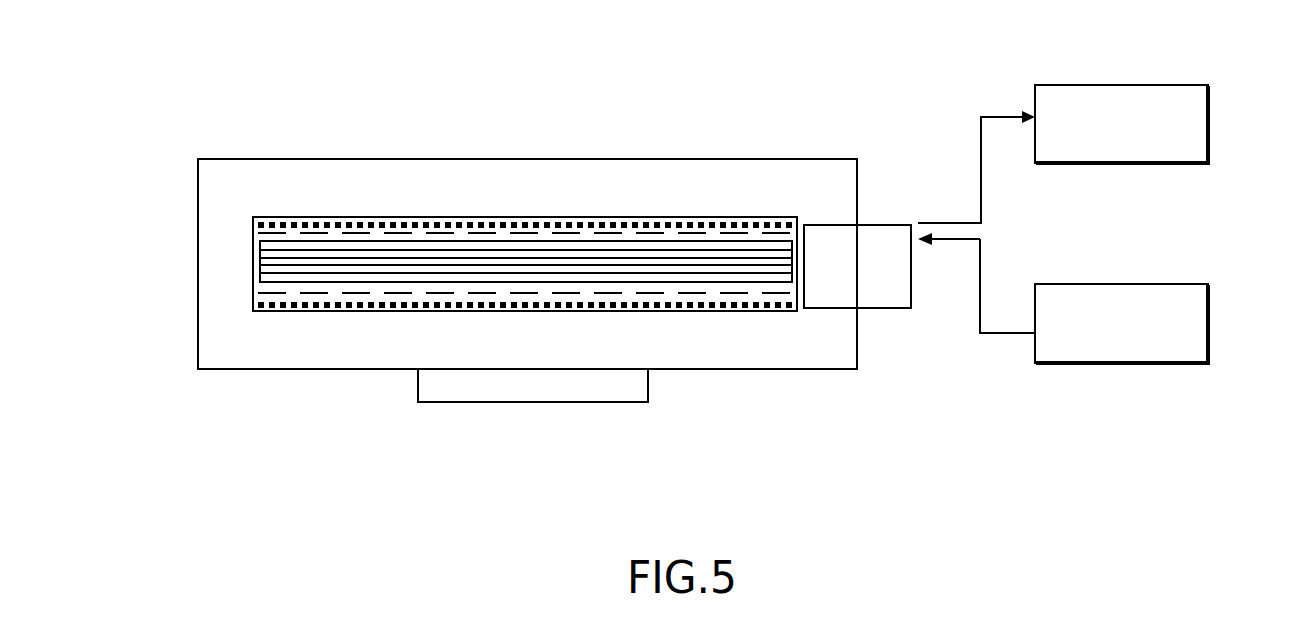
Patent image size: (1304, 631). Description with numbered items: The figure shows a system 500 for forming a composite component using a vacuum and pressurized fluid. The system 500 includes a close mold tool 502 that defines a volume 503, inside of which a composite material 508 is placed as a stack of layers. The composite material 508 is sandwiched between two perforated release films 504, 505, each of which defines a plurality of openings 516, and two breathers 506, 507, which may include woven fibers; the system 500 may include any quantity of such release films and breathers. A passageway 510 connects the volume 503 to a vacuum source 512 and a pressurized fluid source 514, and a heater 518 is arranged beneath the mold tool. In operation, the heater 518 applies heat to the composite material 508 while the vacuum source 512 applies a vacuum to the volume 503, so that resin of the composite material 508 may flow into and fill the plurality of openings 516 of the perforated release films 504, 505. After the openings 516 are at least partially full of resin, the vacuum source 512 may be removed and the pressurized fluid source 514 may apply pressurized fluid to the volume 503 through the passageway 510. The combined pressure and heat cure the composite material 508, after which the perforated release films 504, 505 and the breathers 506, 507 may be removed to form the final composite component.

The system 500 is at (183, 108).
The close mold tool 502 is at (353, 178).
The volume 503 is at (702, 230).
The perforated release film 504 is at (276, 230).
The perforated release film 505 is at (278, 292).
The breather 506 is at (316, 225).
The breather 507 is at (360, 310).
The composite material 508 is at (742, 266).
The passageway 510 is at (887, 309).
The vacuum source 512 is at (1209, 120).
The pressurized fluid source 514 is at (1209, 329).
The openings 516 is at (532, 233).
The heater 518 is at (587, 402).